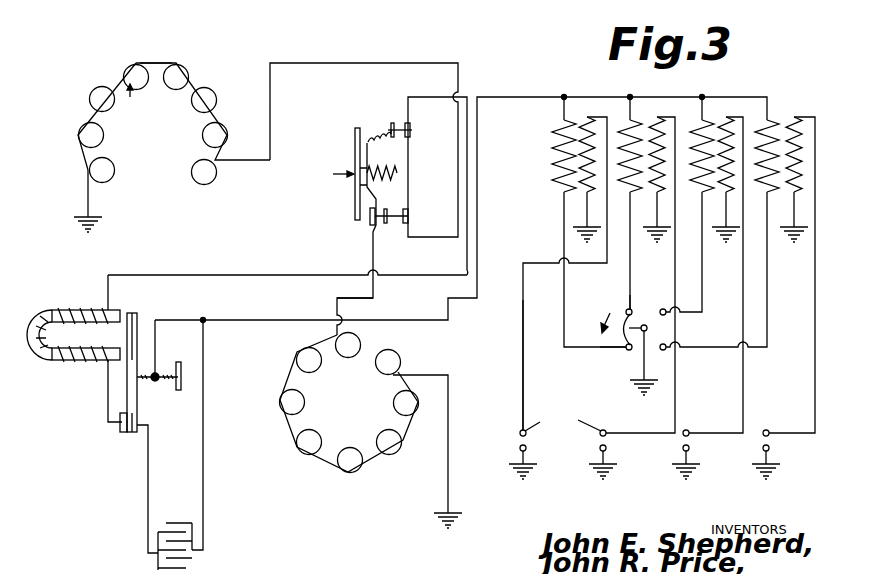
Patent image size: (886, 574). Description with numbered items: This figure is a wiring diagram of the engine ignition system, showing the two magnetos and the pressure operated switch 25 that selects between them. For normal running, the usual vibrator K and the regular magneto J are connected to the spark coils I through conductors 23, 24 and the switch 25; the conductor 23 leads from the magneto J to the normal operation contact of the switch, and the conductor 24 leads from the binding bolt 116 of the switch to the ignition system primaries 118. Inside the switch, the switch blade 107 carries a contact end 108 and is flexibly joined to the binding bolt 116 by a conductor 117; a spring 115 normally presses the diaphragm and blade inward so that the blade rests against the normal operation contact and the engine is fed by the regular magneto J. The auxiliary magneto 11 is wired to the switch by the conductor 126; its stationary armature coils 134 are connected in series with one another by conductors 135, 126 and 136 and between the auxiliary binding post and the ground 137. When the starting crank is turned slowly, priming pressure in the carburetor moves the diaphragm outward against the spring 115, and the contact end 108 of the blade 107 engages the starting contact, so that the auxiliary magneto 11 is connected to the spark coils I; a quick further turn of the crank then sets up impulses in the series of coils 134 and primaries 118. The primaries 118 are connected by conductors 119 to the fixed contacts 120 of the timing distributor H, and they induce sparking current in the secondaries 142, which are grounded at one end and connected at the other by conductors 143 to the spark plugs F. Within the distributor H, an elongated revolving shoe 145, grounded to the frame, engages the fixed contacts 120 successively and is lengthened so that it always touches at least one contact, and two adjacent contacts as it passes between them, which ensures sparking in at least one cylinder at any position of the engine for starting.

The auxiliary magneto 11 is at (83, 110).
The stationary armature coils 134 is at (130, 98).
The conductor 135 is at (163, 63).
The conductor 136 is at (87, 192).
The ground 137 is at (100, 218).
The conductor 126 is at (332, 64).
The switch blade 107 is at (355, 142).
The pressure operated switch 25 is at (351, 191).
The spring 115 is at (395, 169).
The conductor 117 is at (369, 122).
The binding bolt 116 is at (414, 130).
The contact end 108 is at (374, 226).
The conductor 24 is at (228, 319).
The conductor 23 is at (337, 304).
The vibrator K is at (115, 422).
The magneto J is at (285, 425).
The spark coils I is at (550, 168).
The secondaries 142 is at (590, 188).
The primaries 118 is at (636, 125).
The distributor H is at (633, 352).
The fixed contacts 120 is at (662, 309).
The conductors 119 is at (617, 284).
The revolving shoe 145 is at (600, 348).
The conductors 143 is at (522, 290).
The spark plugs F is at (644, 444).